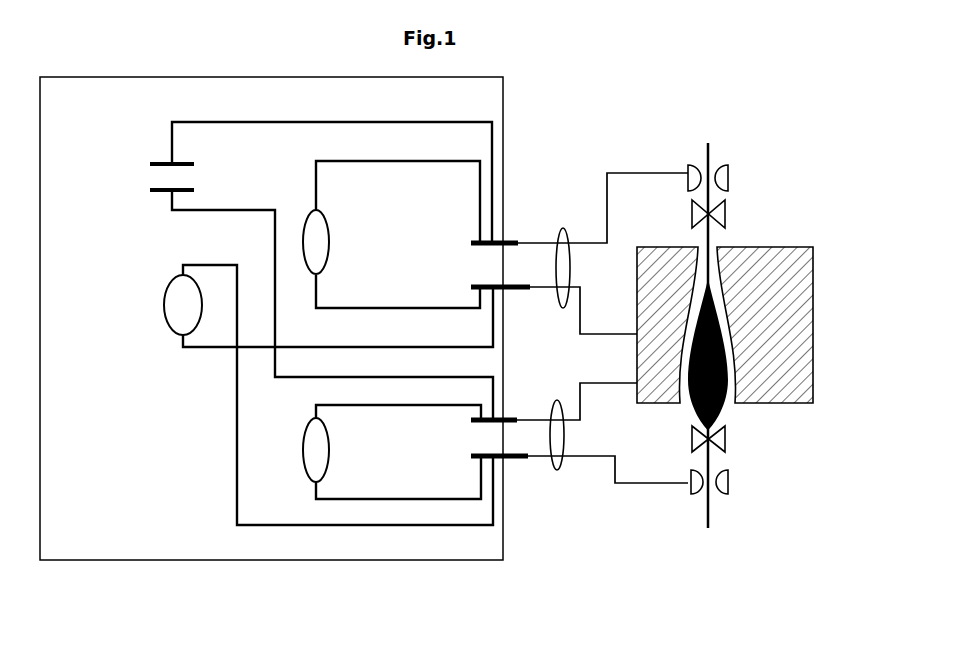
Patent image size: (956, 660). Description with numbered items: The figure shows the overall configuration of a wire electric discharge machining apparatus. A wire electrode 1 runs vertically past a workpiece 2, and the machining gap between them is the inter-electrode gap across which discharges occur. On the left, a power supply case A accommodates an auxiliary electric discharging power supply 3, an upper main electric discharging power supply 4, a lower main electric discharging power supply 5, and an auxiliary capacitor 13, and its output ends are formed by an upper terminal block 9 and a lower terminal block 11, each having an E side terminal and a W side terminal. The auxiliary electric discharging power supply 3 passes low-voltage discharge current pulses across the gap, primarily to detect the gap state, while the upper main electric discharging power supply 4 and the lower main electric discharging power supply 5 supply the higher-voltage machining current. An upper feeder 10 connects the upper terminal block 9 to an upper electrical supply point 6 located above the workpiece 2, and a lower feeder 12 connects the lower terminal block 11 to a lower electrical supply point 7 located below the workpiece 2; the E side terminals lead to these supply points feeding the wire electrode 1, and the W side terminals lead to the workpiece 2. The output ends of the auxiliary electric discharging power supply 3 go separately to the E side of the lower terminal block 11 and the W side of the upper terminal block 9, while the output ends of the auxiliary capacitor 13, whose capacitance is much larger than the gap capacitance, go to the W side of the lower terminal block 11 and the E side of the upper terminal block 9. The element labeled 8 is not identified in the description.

The power supply case A is at (305, 78).
The wire electrode 1 is at (713, 160).
The workpiece 2 is at (813, 400).
The auxiliary electric discharging power supply 3 is at (165, 312).
The upper main electric discharging power supply 4 is at (307, 211).
The lower main electric discharging power supply 5 is at (304, 452).
The upper electrical supply point 6 is at (731, 178).
The lower electrical supply point 7 is at (730, 487).
The clamp 8 is at (735, 215).
The upper terminal block 9 is at (518, 243).
The upper feeder 10 is at (505, 282).
The lower terminal block 11 is at (513, 423).
The lower feeder 12 is at (567, 452).
The auxiliary capacitor 13 is at (155, 198).